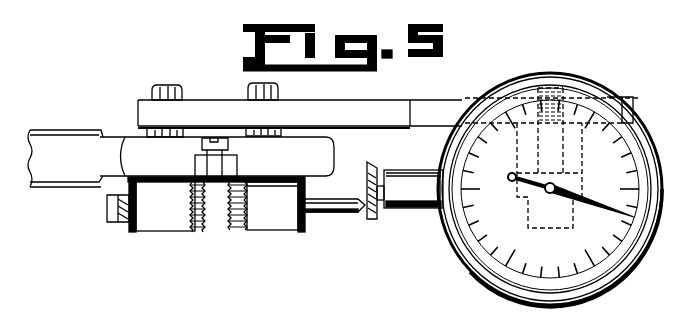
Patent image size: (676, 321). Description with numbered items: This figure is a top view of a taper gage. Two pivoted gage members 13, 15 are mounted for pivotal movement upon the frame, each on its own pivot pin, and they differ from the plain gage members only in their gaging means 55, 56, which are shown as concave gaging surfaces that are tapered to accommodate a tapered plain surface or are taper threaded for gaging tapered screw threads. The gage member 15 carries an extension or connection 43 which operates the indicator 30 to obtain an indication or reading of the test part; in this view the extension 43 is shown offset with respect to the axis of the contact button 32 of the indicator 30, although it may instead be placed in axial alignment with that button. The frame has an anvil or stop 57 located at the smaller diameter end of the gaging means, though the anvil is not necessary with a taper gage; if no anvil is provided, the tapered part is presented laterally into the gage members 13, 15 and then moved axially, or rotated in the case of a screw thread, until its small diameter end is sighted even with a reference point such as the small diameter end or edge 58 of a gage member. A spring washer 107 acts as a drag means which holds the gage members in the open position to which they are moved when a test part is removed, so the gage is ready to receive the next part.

The gage member 13 is at (137, 232).
The gage member 15 is at (296, 230).
The indicator 30 is at (473, 257).
The contact button 32 is at (372, 220).
The extension 43 is at (334, 199).
The gaging means 55 is at (229, 222).
The gaging means 56 is at (205, 228).
The anvil 57 is at (233, 163).
The edge 58 is at (152, 177).
The spring washer 107 is at (125, 177).